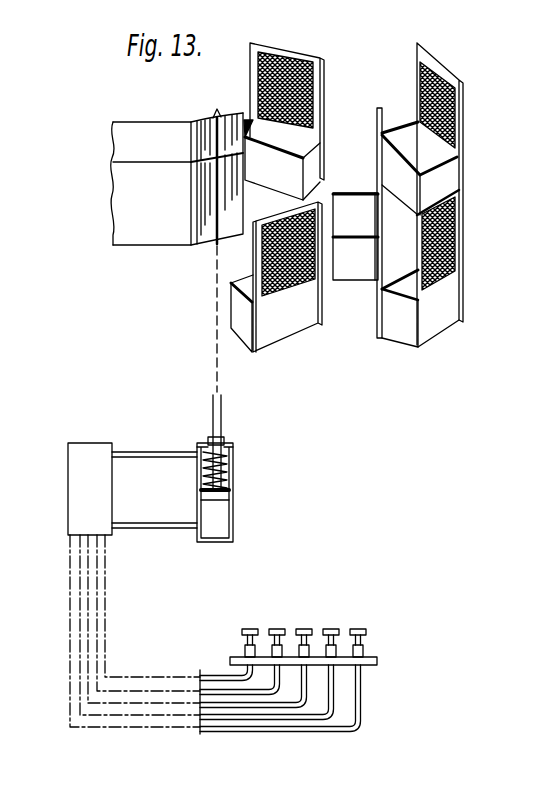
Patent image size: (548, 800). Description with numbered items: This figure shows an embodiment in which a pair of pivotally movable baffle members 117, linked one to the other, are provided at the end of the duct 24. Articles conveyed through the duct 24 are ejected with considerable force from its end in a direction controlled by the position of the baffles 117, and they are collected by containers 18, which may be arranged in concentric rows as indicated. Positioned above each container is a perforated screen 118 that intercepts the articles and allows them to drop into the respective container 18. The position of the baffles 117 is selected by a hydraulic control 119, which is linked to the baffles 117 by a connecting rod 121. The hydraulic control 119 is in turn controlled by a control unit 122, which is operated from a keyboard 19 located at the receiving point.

The baffle members 117 is at (204, 119).
The duct 24 is at (152, 232).
The containers 18 is at (314, 160).
The perforated screen 118 is at (420, 98).
The connecting rod 121 is at (215, 372).
The hydraulic control 119 is at (233, 504).
The control unit 122 is at (72, 502).
The keyboard 19 is at (291, 621).